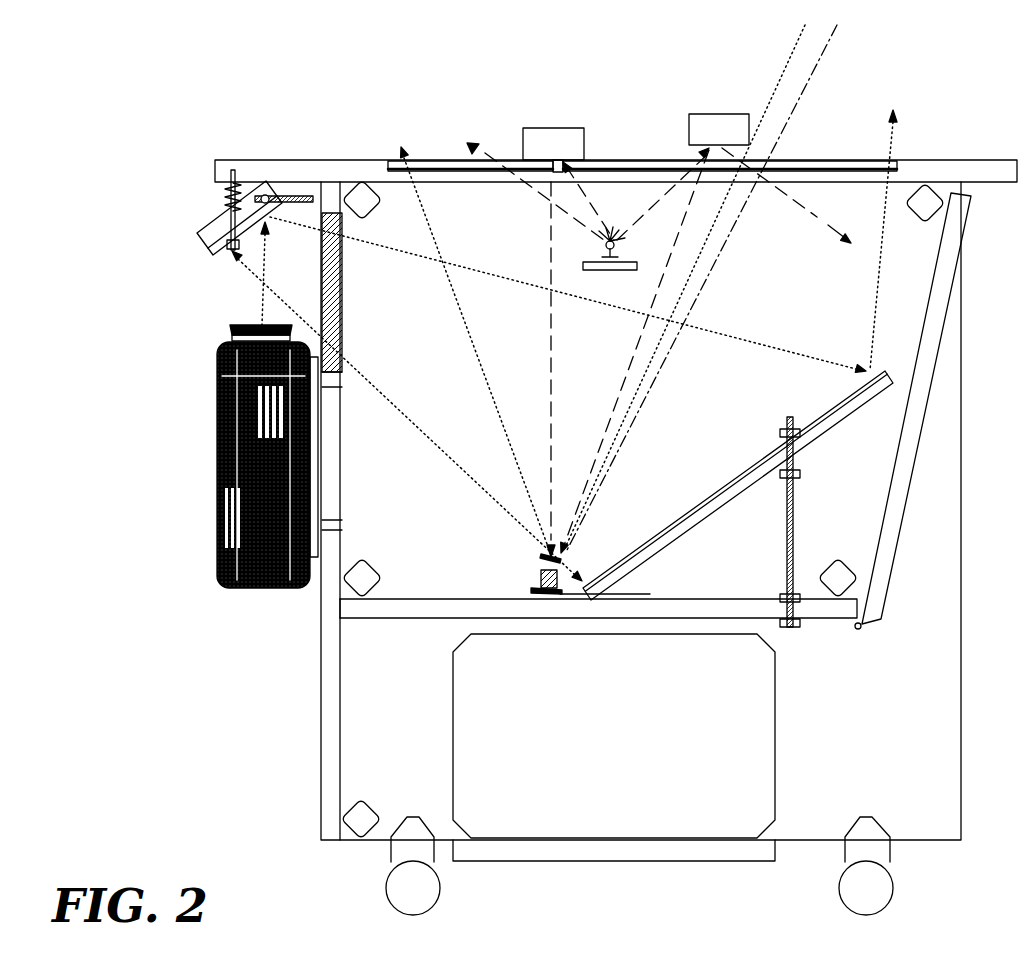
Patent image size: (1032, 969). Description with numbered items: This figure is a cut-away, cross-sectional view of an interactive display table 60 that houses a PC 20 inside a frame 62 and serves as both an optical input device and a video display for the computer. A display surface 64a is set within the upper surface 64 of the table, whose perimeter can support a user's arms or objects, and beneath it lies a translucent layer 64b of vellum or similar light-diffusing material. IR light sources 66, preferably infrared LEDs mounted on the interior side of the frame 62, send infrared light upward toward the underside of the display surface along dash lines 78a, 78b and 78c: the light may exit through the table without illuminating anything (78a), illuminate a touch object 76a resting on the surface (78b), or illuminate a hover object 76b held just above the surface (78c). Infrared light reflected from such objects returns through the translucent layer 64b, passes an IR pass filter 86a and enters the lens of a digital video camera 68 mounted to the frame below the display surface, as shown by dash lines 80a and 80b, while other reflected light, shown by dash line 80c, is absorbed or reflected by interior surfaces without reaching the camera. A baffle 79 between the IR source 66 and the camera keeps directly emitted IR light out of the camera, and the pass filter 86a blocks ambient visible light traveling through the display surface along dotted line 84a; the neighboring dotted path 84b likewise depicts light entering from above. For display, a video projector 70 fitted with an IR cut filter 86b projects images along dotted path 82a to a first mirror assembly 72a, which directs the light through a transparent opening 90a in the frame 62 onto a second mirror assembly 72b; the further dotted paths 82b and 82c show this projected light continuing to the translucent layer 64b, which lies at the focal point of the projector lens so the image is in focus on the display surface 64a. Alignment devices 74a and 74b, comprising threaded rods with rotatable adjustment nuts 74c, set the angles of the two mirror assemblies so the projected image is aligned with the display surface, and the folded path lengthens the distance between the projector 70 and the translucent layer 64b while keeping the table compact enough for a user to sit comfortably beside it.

The PC 20 is at (776, 735).
The interactive display table 60 is at (217, 657).
The frame 62 is at (320, 728).
The upper surface 64 is at (355, 157).
The display surface 64a is at (445, 160).
The translucent layer 64b is at (810, 162).
The IR light source 66 is at (605, 245).
The digital video camera 68 is at (540, 572).
The video projector 70 is at (218, 432).
The first mirror assembly 72a is at (213, 252).
The second mirror assembly 72b is at (703, 497).
The alignment device 74a is at (300, 197).
The alignment device 74b is at (794, 502).
The rotatable adjustment nut 74c is at (228, 243).
The touch object 76a is at (540, 128).
The hover object 76b is at (710, 113).
The dash line 78a is at (527, 186).
The dash line 78b is at (590, 206).
The dash line 78c is at (673, 187).
The baffle 79 is at (612, 272).
The dash line 80a is at (550, 320).
The dash line 80b is at (628, 372).
The dash line 80c is at (805, 212).
The dotted path 82a is at (264, 275).
The optical path 82b is at (777, 350).
The optical path 82c is at (460, 297).
The dotted line 84a is at (795, 52).
The incoming light ray 84b is at (826, 50).
The IR pass filter 86a is at (545, 557).
The IR cut filter 86b is at (230, 333).
The transparent opening 90a is at (342, 337).